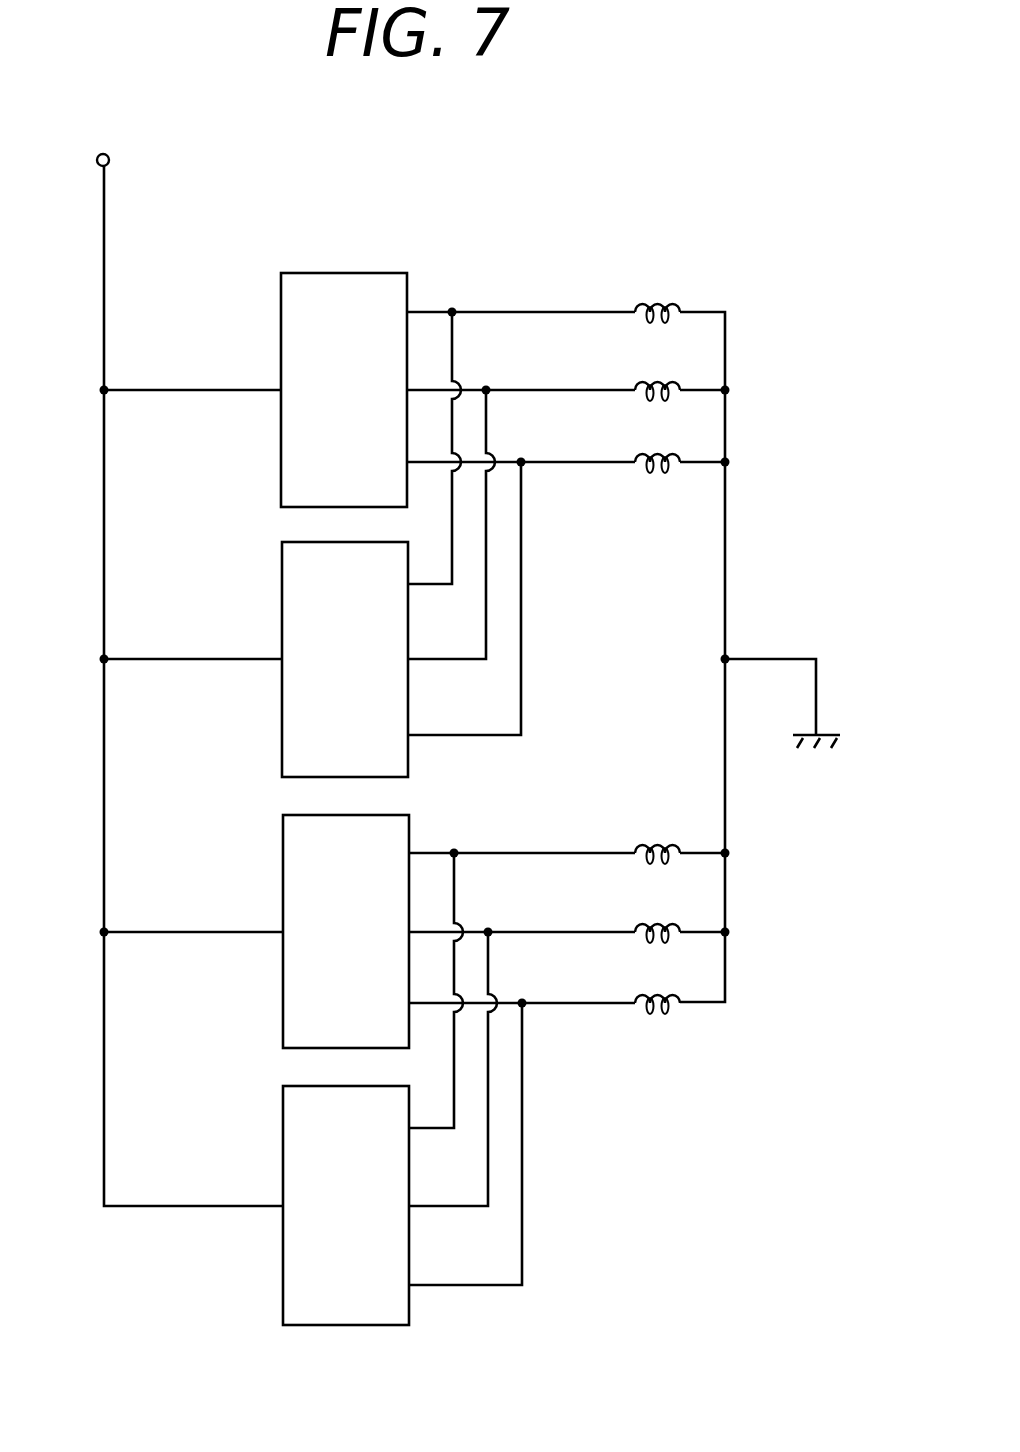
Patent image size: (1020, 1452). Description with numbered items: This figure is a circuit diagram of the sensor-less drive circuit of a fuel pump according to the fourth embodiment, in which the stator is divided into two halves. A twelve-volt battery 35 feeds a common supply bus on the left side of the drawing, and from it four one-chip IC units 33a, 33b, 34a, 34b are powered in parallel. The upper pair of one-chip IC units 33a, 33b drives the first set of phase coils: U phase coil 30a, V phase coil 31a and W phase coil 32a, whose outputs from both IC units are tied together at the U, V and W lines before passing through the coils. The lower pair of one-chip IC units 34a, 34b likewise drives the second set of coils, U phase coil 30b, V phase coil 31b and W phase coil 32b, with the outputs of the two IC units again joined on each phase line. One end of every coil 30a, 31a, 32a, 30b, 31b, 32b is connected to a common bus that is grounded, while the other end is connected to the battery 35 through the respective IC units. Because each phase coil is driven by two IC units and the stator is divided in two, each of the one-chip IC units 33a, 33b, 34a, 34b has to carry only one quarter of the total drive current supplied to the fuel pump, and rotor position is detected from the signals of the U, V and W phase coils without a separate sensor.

The battery 35 is at (110, 161).
The one-chip IC unit 33a is at (281, 304).
The one-chip IC unit 33b is at (282, 577).
The one-chip IC unit 34a is at (283, 847).
The one-chip IC unit 34b is at (283, 1119).
The U phase coil 30a is at (683, 282).
The V phase coil 31a is at (683, 357).
The W phase coil 32a is at (683, 431).
The U phase coil 30b is at (683, 824).
The V phase coil 31b is at (683, 903).
The W phase coil 32b is at (683, 975).